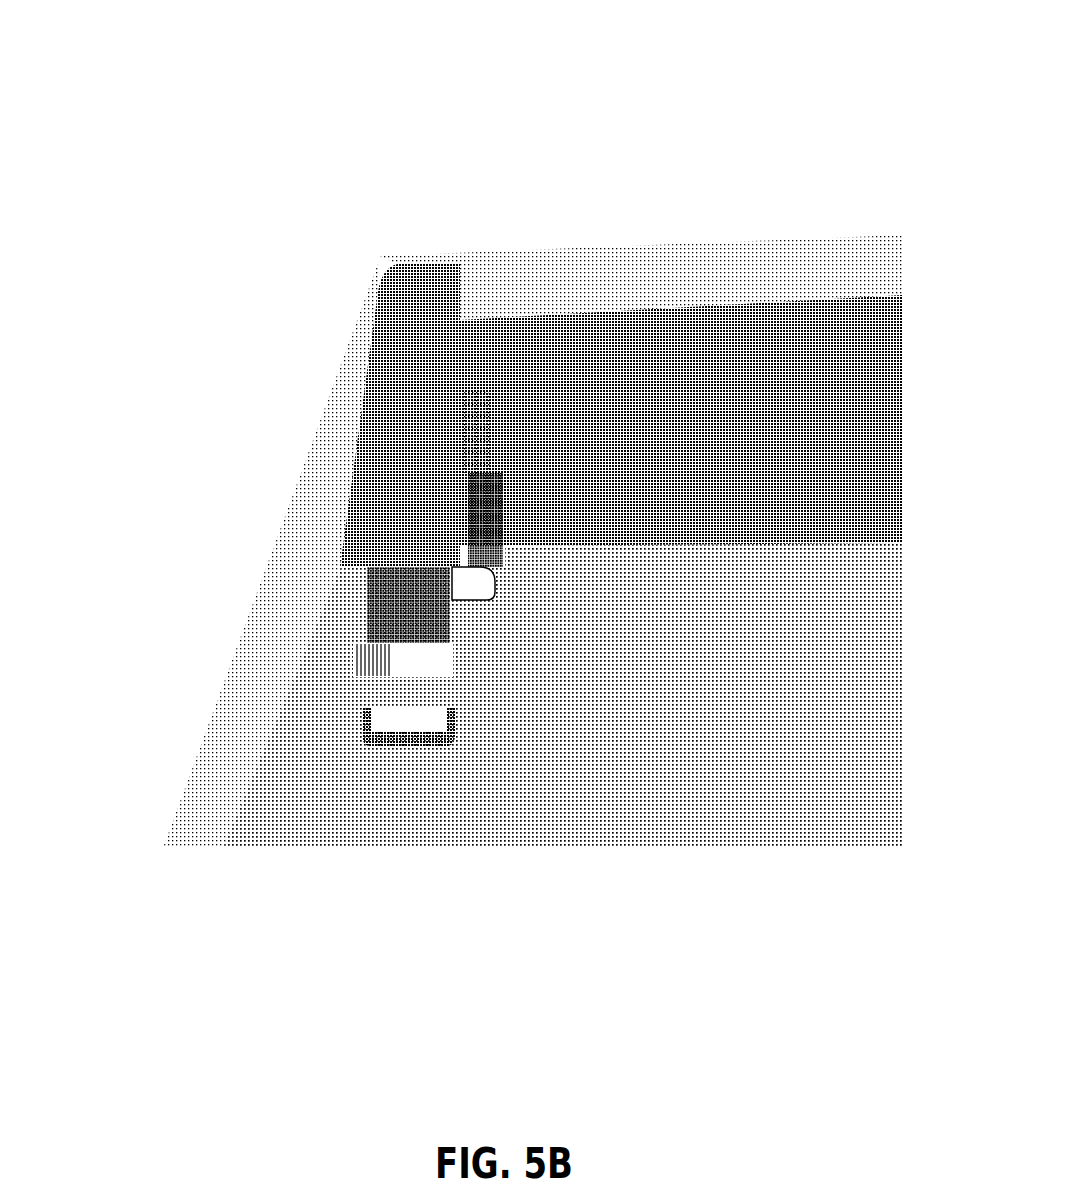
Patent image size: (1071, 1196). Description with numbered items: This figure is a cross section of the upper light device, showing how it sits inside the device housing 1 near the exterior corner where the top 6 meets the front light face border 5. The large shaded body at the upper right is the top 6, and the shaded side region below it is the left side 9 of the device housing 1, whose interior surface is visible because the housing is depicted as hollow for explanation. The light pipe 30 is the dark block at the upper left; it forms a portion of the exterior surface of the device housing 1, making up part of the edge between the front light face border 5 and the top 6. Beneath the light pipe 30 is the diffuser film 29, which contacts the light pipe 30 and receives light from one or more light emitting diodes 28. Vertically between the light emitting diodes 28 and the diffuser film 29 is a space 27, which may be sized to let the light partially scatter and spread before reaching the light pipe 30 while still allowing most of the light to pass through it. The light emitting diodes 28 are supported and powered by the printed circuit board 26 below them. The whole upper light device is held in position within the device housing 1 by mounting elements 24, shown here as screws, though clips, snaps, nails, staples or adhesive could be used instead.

The device housing 1 is at (487, 516).
The front light face border 5 is at (487, 594).
The top 6 is at (674, 219).
The left side 9 is at (817, 790).
The mounting element 24 is at (463, 600).
The printed circuit board 26 is at (330, 692).
The space 27 is at (299, 598).
The light emitting diode 28 is at (355, 660).
The diffuser film 29 is at (337, 566).
The light pipe 30 is at (380, 298).